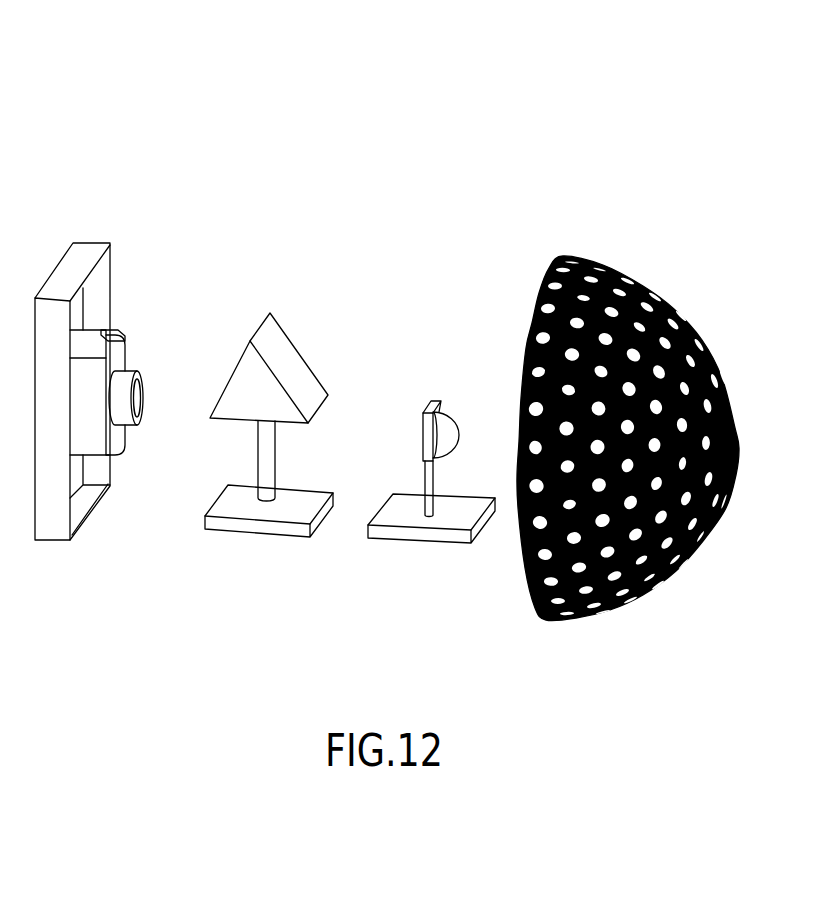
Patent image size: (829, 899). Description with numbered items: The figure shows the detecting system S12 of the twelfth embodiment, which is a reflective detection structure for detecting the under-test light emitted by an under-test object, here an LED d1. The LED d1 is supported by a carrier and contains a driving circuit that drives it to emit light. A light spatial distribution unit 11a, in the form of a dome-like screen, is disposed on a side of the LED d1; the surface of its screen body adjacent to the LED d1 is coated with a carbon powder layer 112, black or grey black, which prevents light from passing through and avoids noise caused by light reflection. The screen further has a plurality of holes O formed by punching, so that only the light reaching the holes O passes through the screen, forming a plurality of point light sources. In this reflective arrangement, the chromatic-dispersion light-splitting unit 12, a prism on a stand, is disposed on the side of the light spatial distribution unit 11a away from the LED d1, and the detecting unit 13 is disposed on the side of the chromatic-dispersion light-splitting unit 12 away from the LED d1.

The detecting system S12 is at (143, 80).
The detecting unit 13 is at (123, 359).
The chromatic-dispersion light-splitting unit 12 is at (285, 352).
The LED d1 is at (415, 423).
The light spatial distribution unit 11a is at (578, 250).
The carbon powder layer 112 is at (665, 292).
The holes O is at (672, 570).